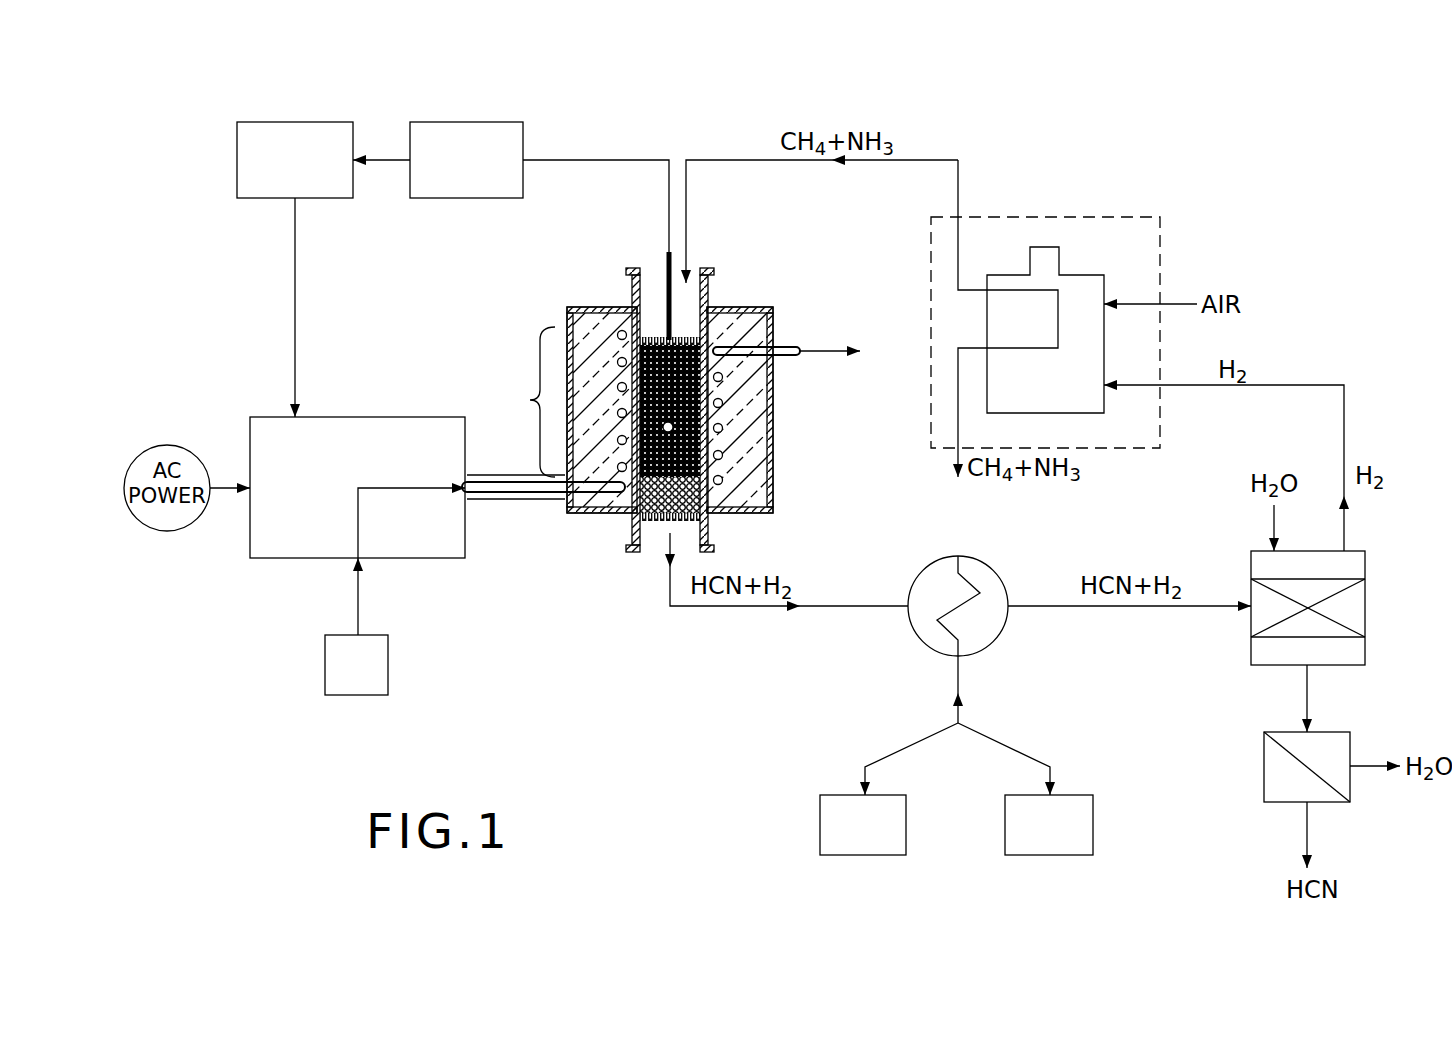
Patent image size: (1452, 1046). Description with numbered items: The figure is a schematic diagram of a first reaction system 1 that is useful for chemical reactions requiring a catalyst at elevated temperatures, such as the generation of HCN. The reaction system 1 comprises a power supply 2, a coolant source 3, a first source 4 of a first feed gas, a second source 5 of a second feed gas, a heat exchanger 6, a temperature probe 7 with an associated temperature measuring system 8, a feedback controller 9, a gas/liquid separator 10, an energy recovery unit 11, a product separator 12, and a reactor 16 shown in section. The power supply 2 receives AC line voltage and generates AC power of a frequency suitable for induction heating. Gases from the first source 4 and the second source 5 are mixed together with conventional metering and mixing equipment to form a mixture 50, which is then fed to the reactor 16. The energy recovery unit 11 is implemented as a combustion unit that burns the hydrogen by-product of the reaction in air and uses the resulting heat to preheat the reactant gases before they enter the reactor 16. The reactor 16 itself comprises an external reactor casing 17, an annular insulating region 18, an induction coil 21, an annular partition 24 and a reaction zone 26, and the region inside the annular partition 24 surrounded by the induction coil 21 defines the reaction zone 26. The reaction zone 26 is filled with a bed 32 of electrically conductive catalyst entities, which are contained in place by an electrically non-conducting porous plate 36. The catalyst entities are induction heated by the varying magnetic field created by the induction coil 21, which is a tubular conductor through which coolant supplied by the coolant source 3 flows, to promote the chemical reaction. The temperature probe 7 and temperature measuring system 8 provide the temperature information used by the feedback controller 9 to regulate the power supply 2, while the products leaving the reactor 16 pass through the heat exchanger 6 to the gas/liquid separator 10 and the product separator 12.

The reaction system 1 is at (1183, 122).
The power supply 2 is at (325, 487).
The coolant source 3 is at (366, 679).
The first source 4 is at (835, 795).
The second source 5 is at (1073, 795).
The heat exchanger 6 is at (927, 565).
The temperature probe 7 is at (667, 257).
The temperature measuring system 8 is at (475, 177).
The feedback controller 9 is at (304, 177).
The gas/liquid separator 10 is at (1346, 668).
The energy recovery unit 11 is at (1130, 217).
The product separator 12 is at (1342, 732).
The reactor 16 is at (639, 378).
The external reactor casing 17 is at (743, 307).
The annular insulating region 18 is at (743, 430).
The induction coil 21 is at (725, 377).
The annular partition 24 is at (630, 313).
The reaction zone 26 is at (524, 402).
The bed of electrically conductive catalyst entities 32 is at (640, 353).
The porous plate 36 is at (657, 333).
The mixture 50 is at (928, 160).